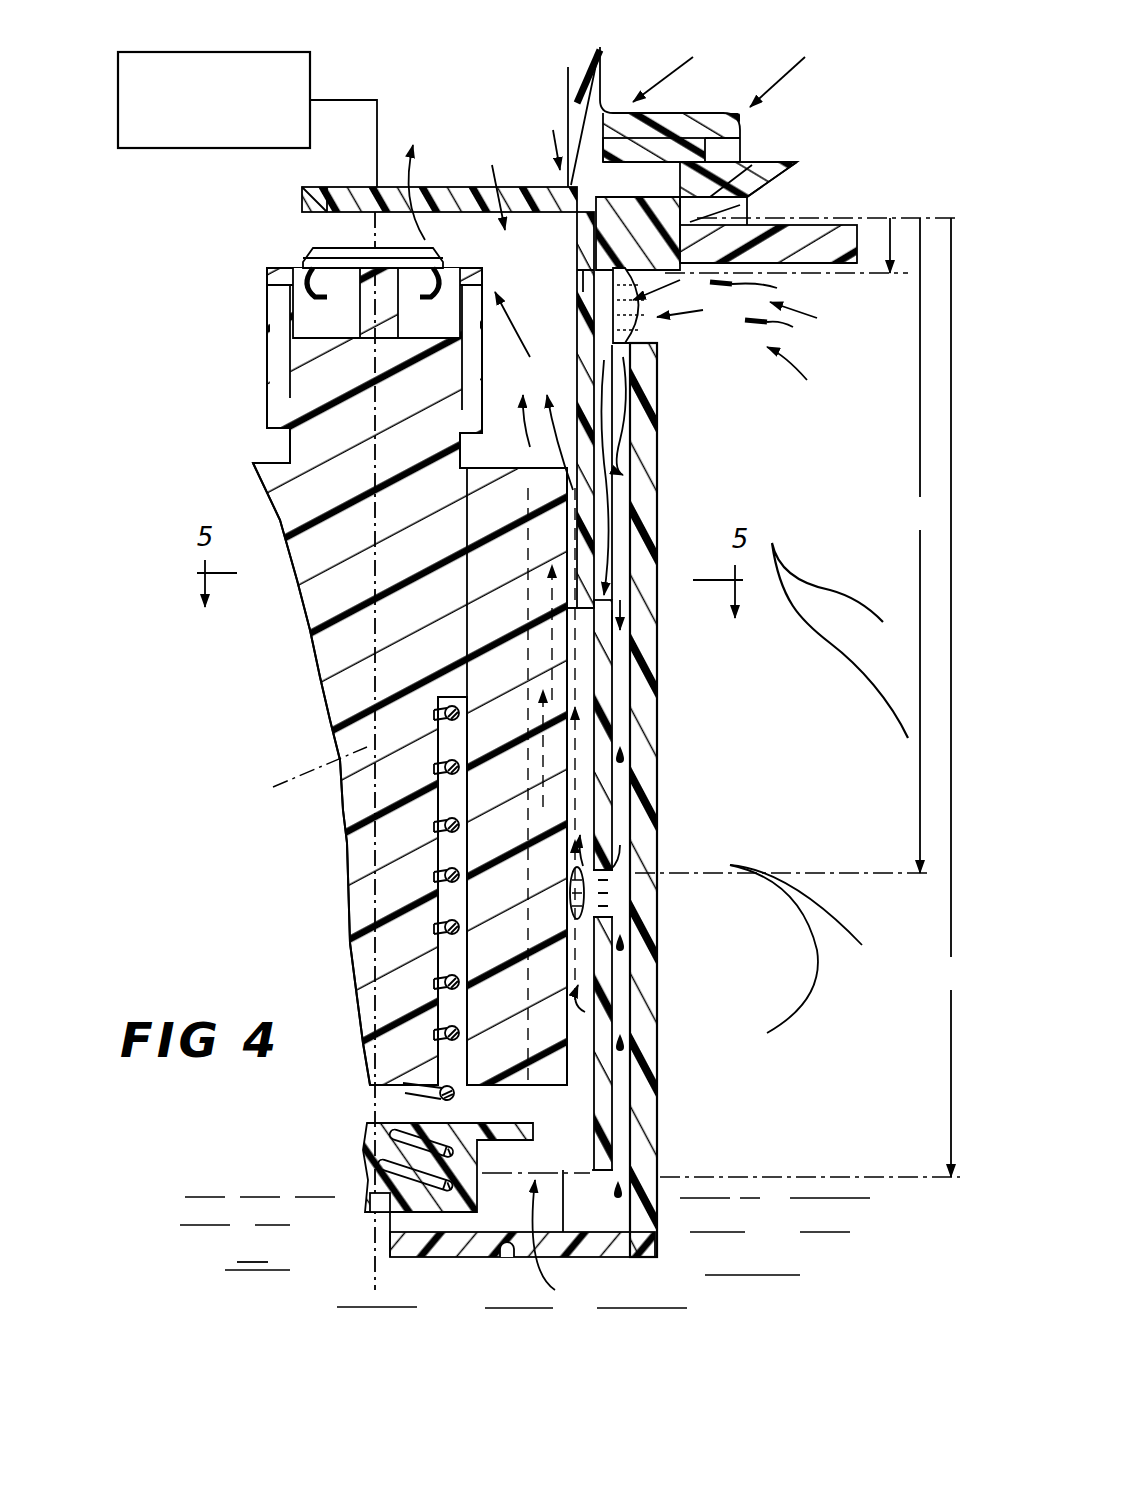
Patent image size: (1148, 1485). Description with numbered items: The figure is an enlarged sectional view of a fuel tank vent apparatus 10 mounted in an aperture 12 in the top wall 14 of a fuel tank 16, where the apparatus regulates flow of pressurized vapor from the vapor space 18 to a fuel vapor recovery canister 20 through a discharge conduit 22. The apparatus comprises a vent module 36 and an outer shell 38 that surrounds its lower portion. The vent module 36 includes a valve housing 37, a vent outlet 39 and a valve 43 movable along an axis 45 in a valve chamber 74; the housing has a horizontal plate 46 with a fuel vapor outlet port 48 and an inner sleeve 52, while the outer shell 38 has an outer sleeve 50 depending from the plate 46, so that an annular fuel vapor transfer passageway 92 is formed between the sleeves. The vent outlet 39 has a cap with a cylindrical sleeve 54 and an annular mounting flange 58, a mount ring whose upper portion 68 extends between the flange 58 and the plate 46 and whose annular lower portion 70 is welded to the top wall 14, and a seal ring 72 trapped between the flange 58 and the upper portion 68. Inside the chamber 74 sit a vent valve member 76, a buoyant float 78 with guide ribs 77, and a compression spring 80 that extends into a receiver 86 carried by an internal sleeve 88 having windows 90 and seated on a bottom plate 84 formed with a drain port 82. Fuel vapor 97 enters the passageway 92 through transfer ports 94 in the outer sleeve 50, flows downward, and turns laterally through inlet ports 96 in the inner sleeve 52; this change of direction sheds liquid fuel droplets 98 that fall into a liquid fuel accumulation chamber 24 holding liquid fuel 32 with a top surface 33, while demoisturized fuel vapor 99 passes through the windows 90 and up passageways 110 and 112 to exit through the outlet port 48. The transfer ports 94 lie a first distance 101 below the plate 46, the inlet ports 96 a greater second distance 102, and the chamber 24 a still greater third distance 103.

The fuel tank vent apparatus 10 is at (175, 370).
The aperture 12 is at (580, 224).
The top wall 14 is at (832, 297).
The fuel tank 16 is at (826, 212).
The vapor space 18 is at (820, 232).
The fuel vapor recovery canister 20 is at (253, 52).
The discharge conduit 22 is at (344, 99).
The liquid fuel accumulation chamber 24 is at (597, 1215).
The liquid fuel 32 is at (830, 935).
The top surface 33 is at (212, 1197).
The vent module 36 is at (626, 668).
The valve housing 37 is at (544, 138).
The outer shell 38 is at (673, 490).
The vent outlet 39 is at (793, 76).
The valve 43 is at (242, 392).
The axis 45 is at (306, 783).
The plate 46 is at (520, 200).
The fuel vapor outlet port 48 is at (333, 197).
The outer sleeve 50 is at (652, 722).
The inner sleeve 52 is at (605, 767).
The cylindrical sleeve 54 is at (595, 90).
The annular mounting flange 58 is at (700, 118).
The upper portion 68 is at (767, 162).
The annular lower portion 70 is at (720, 207).
The seal ring 72 is at (650, 140).
The valve chamber 74 is at (490, 185).
The vent valve member 76 is at (248, 293).
The guide ribs 77 is at (548, 1076).
The buoyant float 78 is at (253, 500).
The compression spring 80 is at (440, 873).
The drain port 82 is at (510, 1258).
The bottom plate 84 is at (615, 1257).
The receiver 86 is at (407, 1212).
The internal sleeve 88 is at (583, 281).
The windows 90 is at (580, 608).
The fuel vapor transfer passageway 92 is at (625, 630).
The fuel vapor transfer port 94 is at (643, 323).
The fuel vapor inlet port 96 is at (567, 905).
The fuel vapor 97 is at (703, 310).
The liquid fuel droplets 98 is at (793, 327).
The demoisturized fuel vapor 99 is at (418, 178).
The first distance 101 is at (890, 218).
The second distance 102 is at (786, 545).
The third distance 103 is at (810, 697).
The passageways 110 is at (585, 1012).
The passageways 112 is at (567, 537).